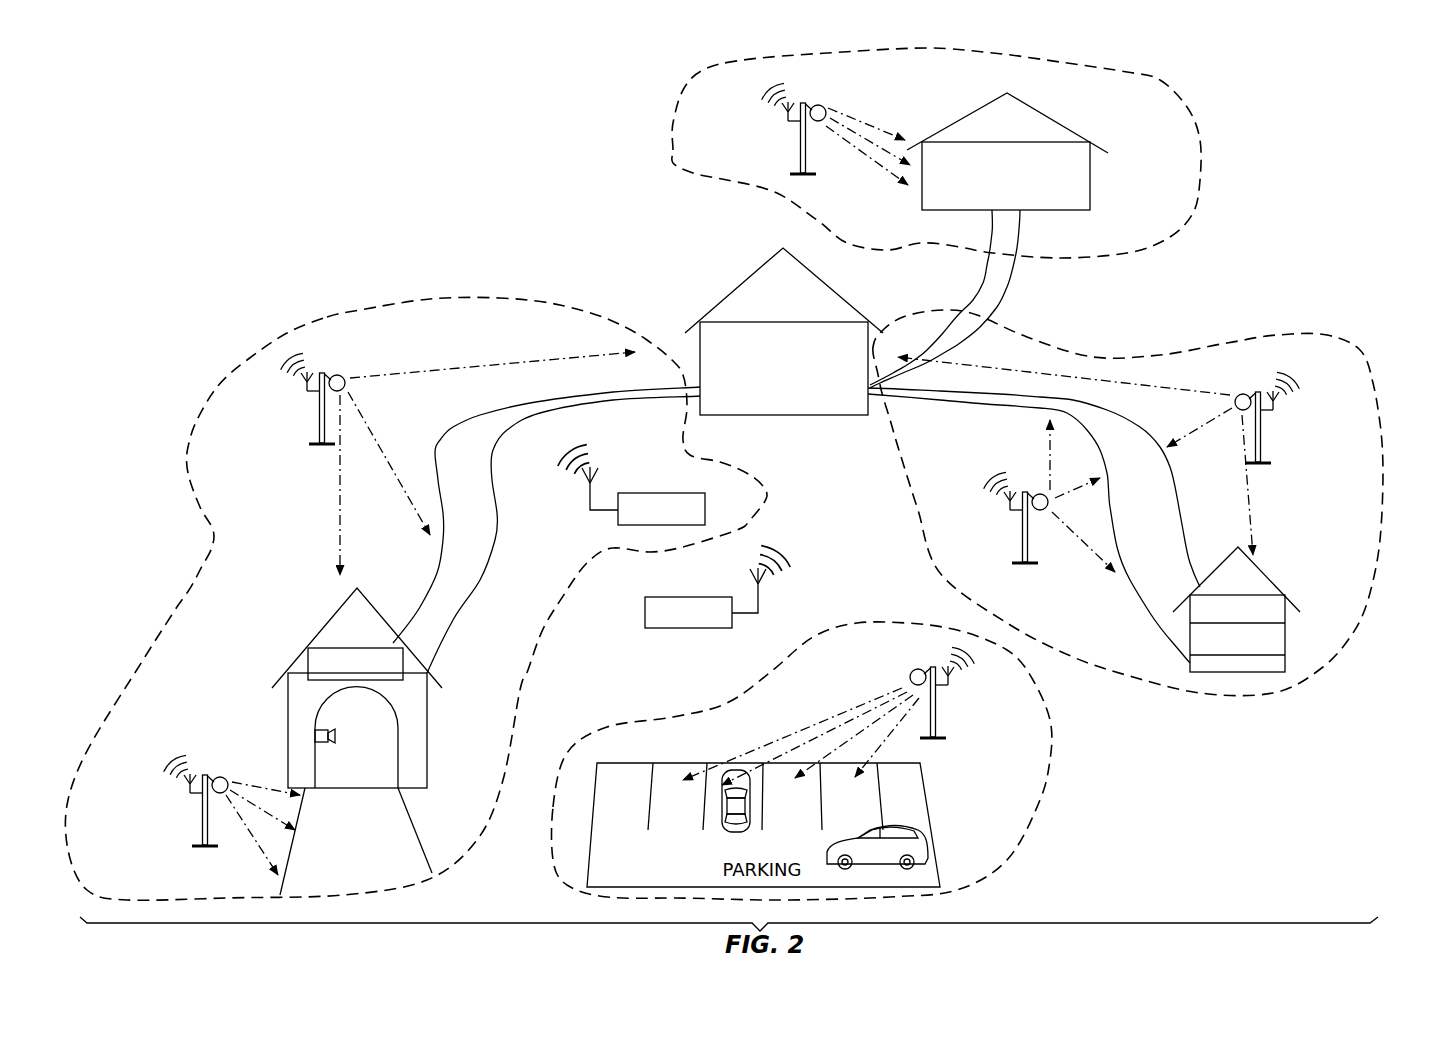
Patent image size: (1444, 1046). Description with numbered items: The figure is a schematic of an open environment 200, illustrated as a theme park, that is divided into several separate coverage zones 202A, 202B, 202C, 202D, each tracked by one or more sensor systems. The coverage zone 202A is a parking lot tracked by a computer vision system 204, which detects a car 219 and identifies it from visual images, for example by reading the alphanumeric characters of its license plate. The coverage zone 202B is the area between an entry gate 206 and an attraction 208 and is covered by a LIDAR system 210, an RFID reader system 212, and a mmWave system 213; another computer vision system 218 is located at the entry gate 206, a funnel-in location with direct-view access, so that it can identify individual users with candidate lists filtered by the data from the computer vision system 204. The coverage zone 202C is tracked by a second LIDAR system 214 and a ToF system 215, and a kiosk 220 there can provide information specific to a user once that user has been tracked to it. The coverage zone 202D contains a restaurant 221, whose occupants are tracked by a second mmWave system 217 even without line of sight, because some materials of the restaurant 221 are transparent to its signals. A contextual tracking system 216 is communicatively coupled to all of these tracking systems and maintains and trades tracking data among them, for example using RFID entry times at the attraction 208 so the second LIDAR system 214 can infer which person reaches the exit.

The open environment 200 is at (1366, 86).
The coverage zone 202A is at (683, 680).
The coverage zone 202B is at (465, 284).
The coverage zone 202C is at (1155, 345).
The coverage zone 202D is at (1142, 84).
The computer vision system 204 is at (912, 672).
The entry gate 206 is at (428, 742).
The attraction 208 is at (735, 292).
The LIDAR system 210 is at (345, 375).
The RFID reader system 212 is at (663, 495).
The mmWave system 213 is at (228, 777).
The second LIDAR system 214 is at (1235, 393).
The ToF system 215 is at (1040, 490).
The contextual tracking system 216 is at (690, 598).
The second mmWave system 217 is at (823, 104).
The computer vision system 218 is at (327, 731).
The car 219 is at (728, 832).
The kiosk 220 is at (1270, 582).
The restaurant 221 is at (1058, 128).